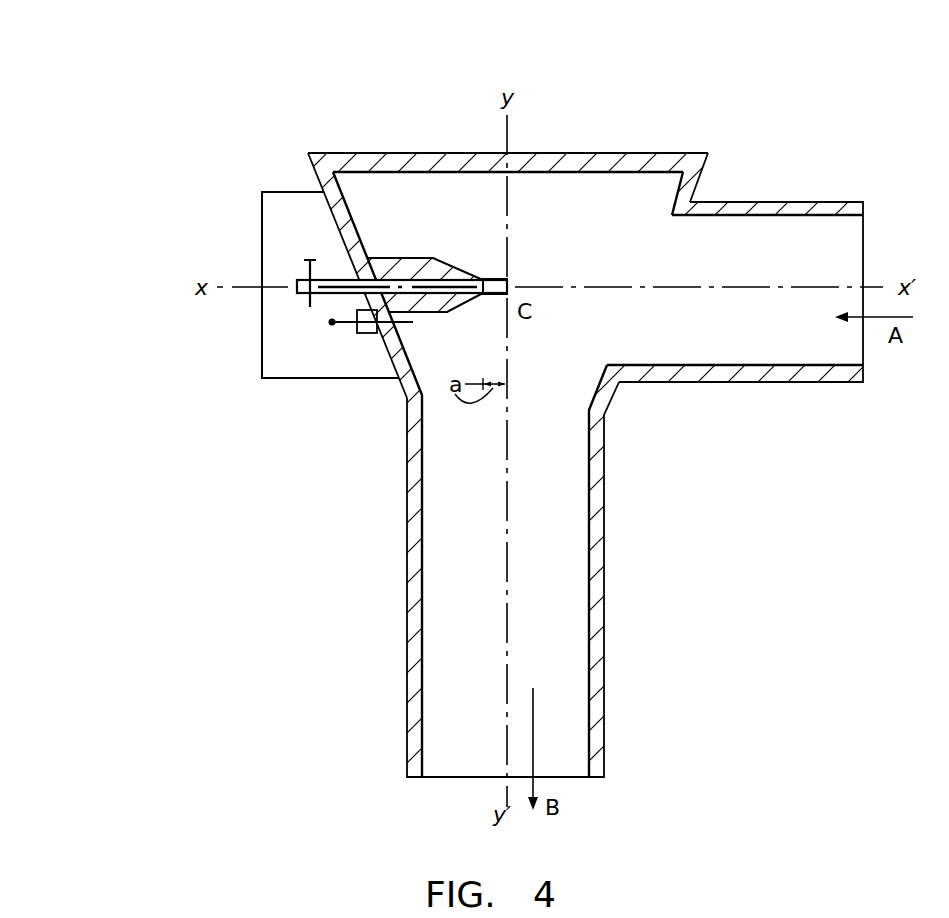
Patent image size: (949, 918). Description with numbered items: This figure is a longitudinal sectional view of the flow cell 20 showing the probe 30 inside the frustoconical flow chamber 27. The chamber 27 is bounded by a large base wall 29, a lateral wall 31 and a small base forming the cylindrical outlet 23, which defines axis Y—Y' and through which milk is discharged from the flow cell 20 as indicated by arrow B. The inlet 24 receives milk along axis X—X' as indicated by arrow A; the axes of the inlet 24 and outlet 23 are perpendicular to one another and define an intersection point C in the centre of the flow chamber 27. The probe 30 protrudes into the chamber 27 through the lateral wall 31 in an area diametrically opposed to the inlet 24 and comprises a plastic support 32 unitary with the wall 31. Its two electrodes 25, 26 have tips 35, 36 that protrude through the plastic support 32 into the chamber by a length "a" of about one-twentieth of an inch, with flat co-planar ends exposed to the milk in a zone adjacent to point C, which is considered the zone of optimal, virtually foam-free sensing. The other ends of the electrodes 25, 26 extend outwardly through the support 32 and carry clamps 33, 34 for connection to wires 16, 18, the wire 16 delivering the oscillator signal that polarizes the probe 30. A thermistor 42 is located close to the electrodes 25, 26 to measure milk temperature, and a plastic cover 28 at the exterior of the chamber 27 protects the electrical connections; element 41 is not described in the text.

The flow cell 20 is at (645, 93).
The outlet 23 is at (557, 395).
The inlet 24 is at (712, 232).
The flow chamber 27 is at (656, 192).
The large base wall 29 is at (382, 153).
The lateral wall 31 is at (400, 387).
The plastic cover 28 is at (288, 380).
The probe 30 is at (410, 242).
The plastic support 32 is at (437, 303).
The wire 16 is at (295, 283).
The wire 18 is at (343, 228).
The clamp 34 is at (307, 262).
The clamp 33 is at (307, 185).
The electrode 25 is at (507, 270).
The electrode 26 is at (550, 255).
The electrode tip 35 is at (510, 289).
The electrode tip 36 is at (572, 309).
The seal block 41 is at (360, 334).
The thermistor 42 is at (328, 325).